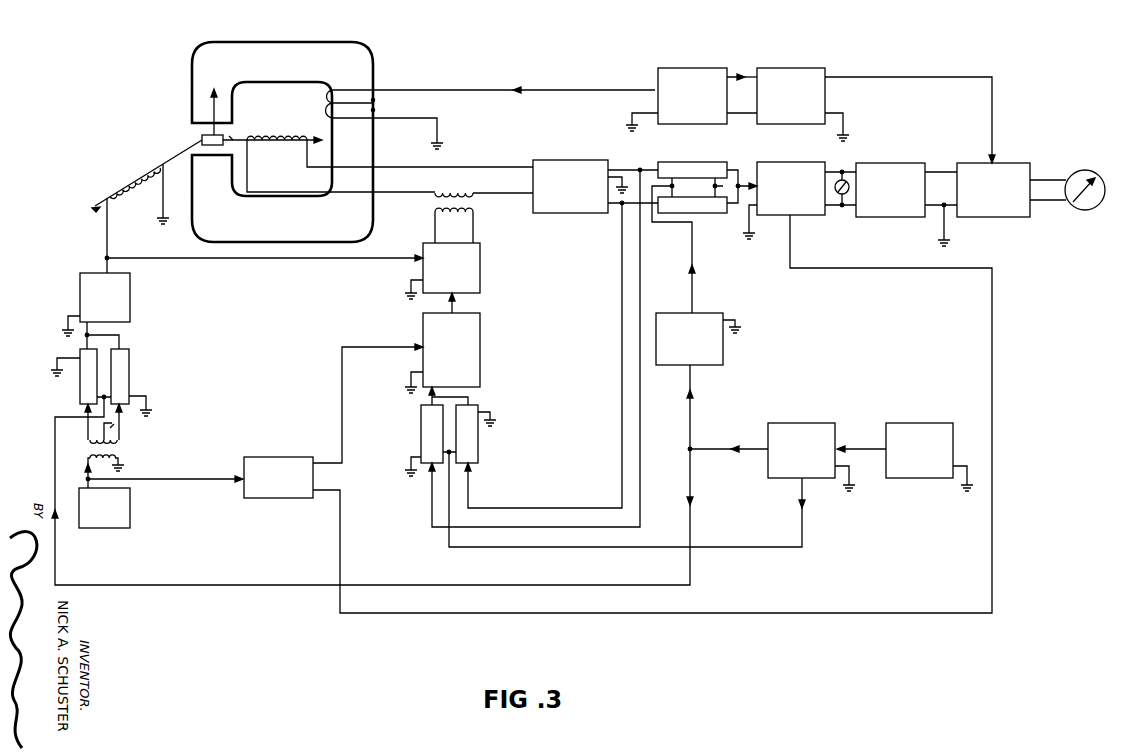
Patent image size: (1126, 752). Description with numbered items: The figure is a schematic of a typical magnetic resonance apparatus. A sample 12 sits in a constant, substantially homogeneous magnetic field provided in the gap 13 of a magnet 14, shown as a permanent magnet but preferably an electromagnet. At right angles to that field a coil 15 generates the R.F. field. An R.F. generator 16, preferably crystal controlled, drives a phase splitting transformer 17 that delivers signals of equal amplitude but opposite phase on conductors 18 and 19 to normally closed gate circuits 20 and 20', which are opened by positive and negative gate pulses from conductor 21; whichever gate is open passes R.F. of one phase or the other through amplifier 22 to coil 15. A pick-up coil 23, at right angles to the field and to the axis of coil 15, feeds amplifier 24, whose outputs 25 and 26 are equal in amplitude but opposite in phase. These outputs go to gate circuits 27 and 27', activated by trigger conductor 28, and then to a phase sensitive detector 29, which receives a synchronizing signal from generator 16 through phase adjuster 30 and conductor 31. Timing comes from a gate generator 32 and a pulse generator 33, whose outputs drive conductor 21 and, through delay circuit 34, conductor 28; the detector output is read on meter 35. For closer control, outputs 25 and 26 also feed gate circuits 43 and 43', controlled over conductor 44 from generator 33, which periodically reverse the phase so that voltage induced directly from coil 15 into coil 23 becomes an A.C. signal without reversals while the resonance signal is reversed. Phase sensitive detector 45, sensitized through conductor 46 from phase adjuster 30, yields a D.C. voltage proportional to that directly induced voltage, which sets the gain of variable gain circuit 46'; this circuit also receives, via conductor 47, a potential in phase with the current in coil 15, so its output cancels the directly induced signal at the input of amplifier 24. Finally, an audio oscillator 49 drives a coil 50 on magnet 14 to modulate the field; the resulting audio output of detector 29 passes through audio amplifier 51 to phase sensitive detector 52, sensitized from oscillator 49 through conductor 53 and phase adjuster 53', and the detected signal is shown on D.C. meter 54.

The sample 12 is at (201, 139).
The gap 13 is at (229, 136).
The magnet 14 is at (297, 42).
The coil 15 is at (143, 174).
The R.F. generator 16 is at (131, 525).
The phase splitting transformer 17 is at (90, 453).
The conductor 18 is at (89, 440).
The conductor 19 is at (115, 427).
The gate circuit 20 is at (73, 363).
The gate circuit 20' is at (144, 382).
The conductor 21 is at (55, 460).
The amplifier 22 is at (132, 282).
The pick-up coil 23 is at (276, 136).
The amplifier 24 is at (585, 160).
The output 25 is at (640, 162).
The output 26 is at (643, 205).
The gate circuit 27 is at (707, 169).
The gate circuit 27' is at (692, 222).
The trigger conductor 28 is at (692, 300).
The phase sensitive detector 29 is at (797, 162).
The phase adjuster 30 is at (290, 500).
The conductor 31 is at (992, 337).
The gate generator 32 is at (920, 423).
The pulse generator 33 is at (815, 423).
The delay circuit 34 is at (725, 358).
The meter 35 is at (841, 179).
The gate circuit 43 is at (486, 434).
The gate circuit 43' is at (401, 439).
The conductor 44 is at (803, 546).
The phase sensitive detector 45 is at (482, 372).
The conductor 46 is at (355, 403).
The variable gain circuit 46' is at (469, 253).
The conductor 47 is at (318, 258).
The audio oscillator 49 is at (700, 68).
The coil 50 is at (338, 92).
The audio amplifier 51 is at (875, 163).
The phase sensitive detector 52 is at (996, 163).
The conductor 53 is at (910, 97).
The phase adjuster 53' is at (803, 88).
The D.C. meter 54 is at (1090, 171).